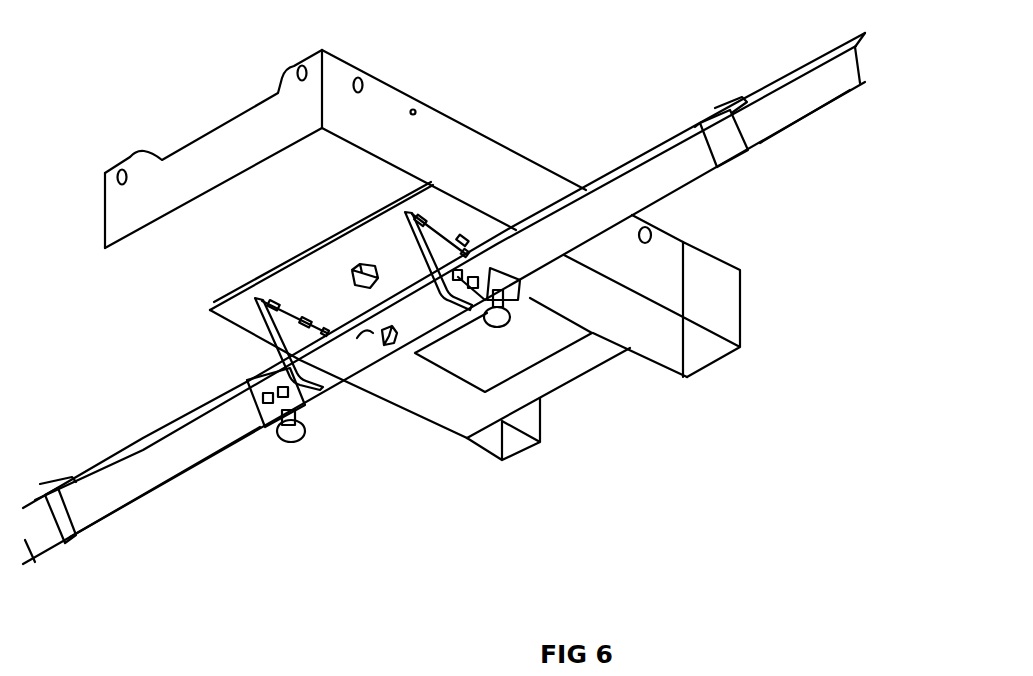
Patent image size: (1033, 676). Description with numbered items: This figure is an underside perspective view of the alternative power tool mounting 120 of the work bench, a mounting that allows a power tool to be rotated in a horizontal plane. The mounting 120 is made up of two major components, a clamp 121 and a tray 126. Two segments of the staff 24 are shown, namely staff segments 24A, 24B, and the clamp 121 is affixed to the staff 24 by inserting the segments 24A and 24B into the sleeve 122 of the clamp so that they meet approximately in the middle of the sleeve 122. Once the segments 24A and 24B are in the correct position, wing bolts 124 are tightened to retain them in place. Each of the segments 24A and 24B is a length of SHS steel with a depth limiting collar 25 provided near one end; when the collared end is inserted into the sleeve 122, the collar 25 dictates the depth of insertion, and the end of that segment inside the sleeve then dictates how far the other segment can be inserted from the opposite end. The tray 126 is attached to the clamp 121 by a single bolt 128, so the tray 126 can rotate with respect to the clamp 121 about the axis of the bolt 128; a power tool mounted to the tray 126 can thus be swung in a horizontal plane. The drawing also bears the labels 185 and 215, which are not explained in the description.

The power tool mounting 120 is at (521, 116).
The clamp 121 is at (240, 320).
The sleeve 122 is at (257, 412).
The wing bolts 124 is at (312, 440).
The tray 126 is at (145, 265).
The bolt 128 is at (375, 245).
The strap 185 is at (380, 342).
The clip 215 is at (390, 329).
The staff 24 is at (640, 156).
The staff segment 24A is at (153, 487).
The staff segment 24B is at (795, 60).
The depth limiting collar 25 is at (47, 493).